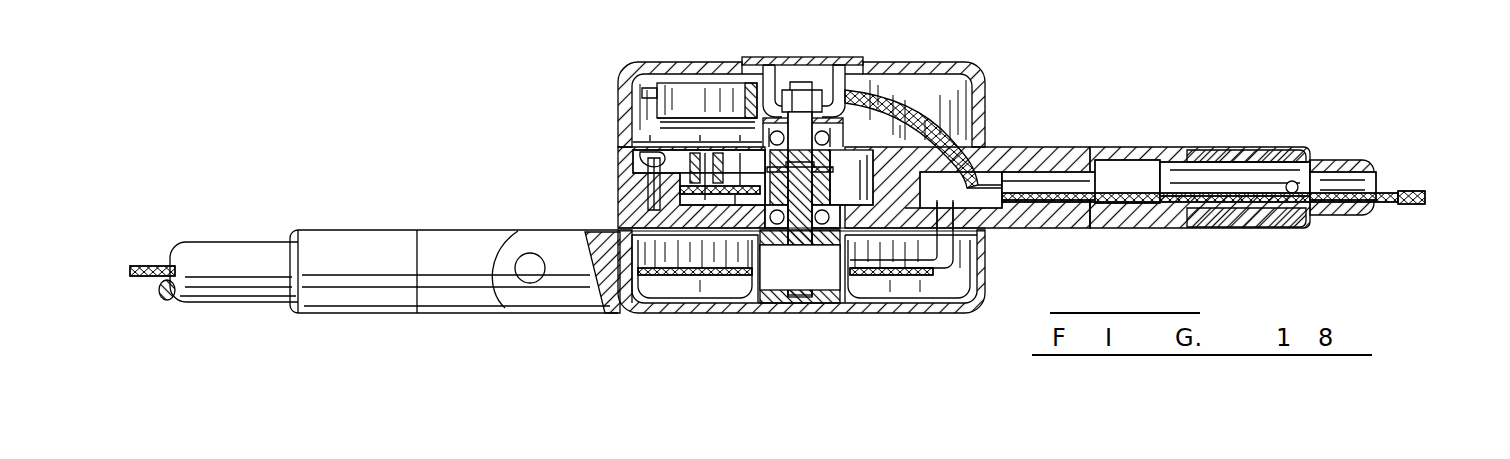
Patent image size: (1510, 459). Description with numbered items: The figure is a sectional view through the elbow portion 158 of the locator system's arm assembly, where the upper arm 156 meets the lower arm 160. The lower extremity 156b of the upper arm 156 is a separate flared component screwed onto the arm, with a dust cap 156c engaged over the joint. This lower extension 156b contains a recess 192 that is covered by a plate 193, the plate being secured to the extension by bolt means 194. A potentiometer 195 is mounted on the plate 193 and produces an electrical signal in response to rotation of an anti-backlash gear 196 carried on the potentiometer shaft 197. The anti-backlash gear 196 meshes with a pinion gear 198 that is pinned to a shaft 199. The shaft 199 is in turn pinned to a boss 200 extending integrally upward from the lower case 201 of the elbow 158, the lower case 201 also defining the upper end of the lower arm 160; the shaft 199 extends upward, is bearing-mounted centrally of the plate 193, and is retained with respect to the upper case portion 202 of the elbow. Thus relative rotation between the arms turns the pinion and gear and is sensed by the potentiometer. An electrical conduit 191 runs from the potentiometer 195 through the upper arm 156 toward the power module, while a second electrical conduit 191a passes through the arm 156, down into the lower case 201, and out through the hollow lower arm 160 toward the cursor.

The elbow portion 158 is at (913, 58).
The upper case portion 202 is at (1023, 34).
The plate 193 is at (853, 192).
The potentiometer 195 is at (699, 105).
The bolt means 194 is at (1045, 102).
The lower extremity of the upper arm 156b is at (1153, 113).
The dust cap 156c is at (1313, 113).
The upper arm 156 is at (1322, 161).
The electrical conduit 191 is at (1381, 196).
The second electrical conduit 191a is at (1420, 206).
The recess 192 is at (642, 156).
The potentiometer shaft 197 is at (650, 200).
The anti-backlash gear 196 is at (620, 212).
The lower arm 160 is at (232, 240).
The pinion gear 198 is at (760, 233).
The boss 200 is at (775, 288).
The shaft 199 is at (815, 272).
The lower case 201 is at (950, 313).